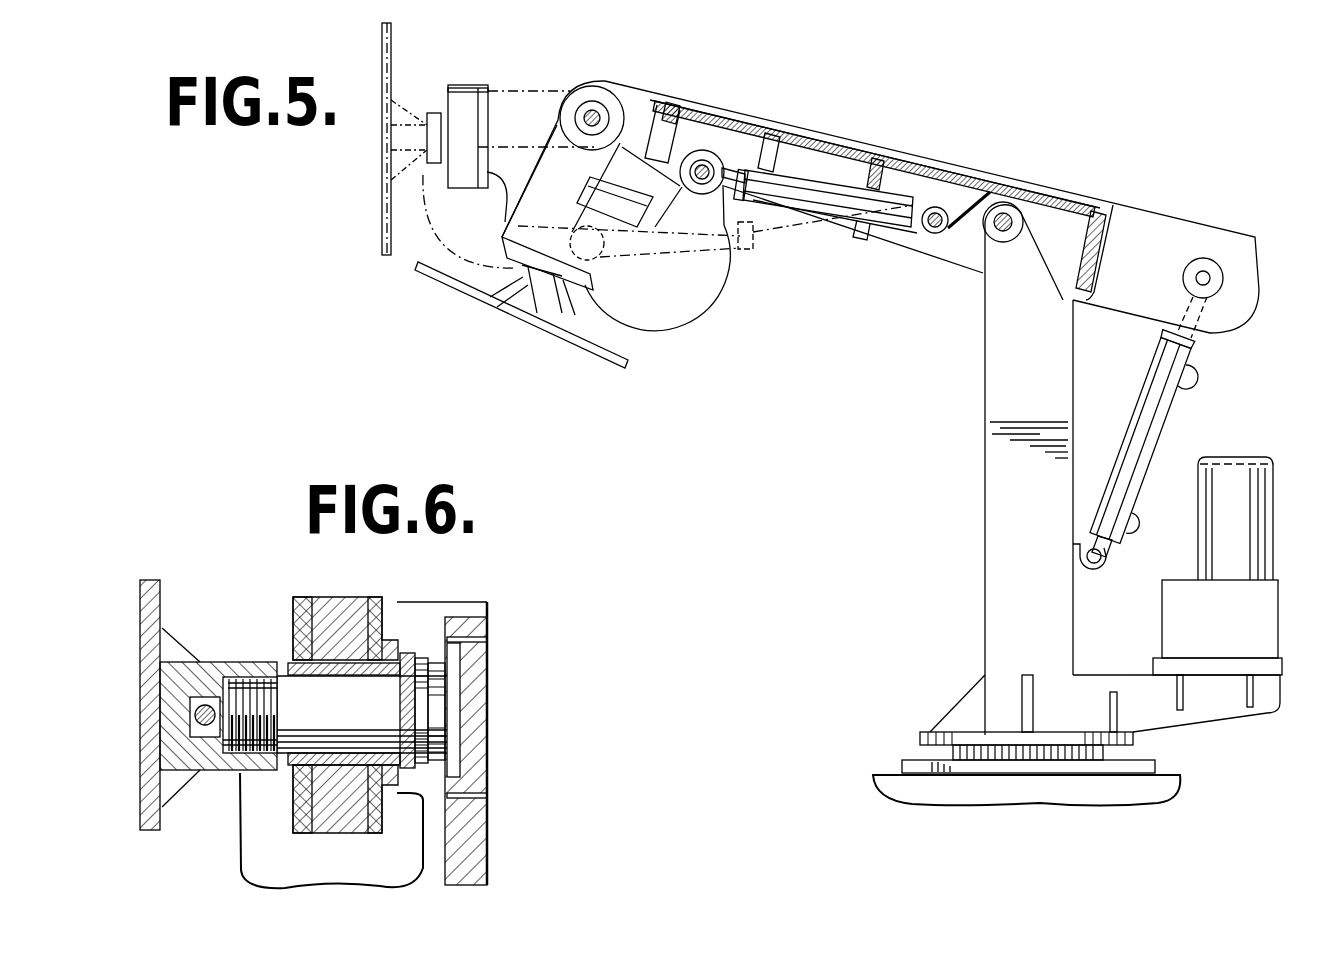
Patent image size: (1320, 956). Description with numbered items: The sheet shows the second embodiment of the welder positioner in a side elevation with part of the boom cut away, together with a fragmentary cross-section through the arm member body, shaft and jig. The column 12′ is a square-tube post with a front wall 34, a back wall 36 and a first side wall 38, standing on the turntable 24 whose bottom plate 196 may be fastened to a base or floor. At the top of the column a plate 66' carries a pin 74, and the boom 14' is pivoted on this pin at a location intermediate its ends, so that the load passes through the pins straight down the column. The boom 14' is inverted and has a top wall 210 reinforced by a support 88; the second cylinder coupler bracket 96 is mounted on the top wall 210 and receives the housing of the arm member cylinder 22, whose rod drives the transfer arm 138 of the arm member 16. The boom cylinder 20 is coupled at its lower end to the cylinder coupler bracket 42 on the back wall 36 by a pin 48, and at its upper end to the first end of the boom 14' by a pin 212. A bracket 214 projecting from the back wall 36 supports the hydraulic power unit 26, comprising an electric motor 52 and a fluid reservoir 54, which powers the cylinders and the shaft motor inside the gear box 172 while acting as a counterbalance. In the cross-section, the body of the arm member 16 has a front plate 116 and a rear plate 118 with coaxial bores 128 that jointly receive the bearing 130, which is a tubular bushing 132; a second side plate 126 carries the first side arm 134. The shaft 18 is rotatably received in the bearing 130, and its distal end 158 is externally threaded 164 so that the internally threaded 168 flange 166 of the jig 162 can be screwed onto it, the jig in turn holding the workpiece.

In FIG. 5, the column 12′ is at (997, 502).
In FIG. 5, the boom 14' is at (880, 207).
In FIG. 5, the arm member 16 is at (548, 172).
In FIG. 5, the shaft 18 is at (520, 258).
In FIG. 6, the shaft 18 is at (285, 678).
In FIG. 5, the boom cylinder 20 is at (1152, 383).
In FIG. 5, the arm member cylinder 22 is at (818, 187).
In FIG. 5, the turntable 24 is at (1100, 753).
In FIG. 5, the hydraulic power unit 26 is at (1242, 472).
In FIG. 5, the front wall 34 is at (985, 573).
In FIG. 5, the back wall 36 is at (1073, 637).
In FIG. 5, the first side wall 38 is at (997, 640).
In FIG. 5, the cylinder coupler bracket 42 is at (1077, 570).
In FIG. 5, the pin 48 is at (1104, 562).
In FIG. 5, the electric motor 52 is at (1258, 535).
In FIG. 5, the fluid reservoir 54 is at (1268, 617).
In FIG. 5, the plate 66' is at (999, 255).
In FIG. 5, the pin 74 is at (1012, 222).
In FIG. 5, the support 88 is at (880, 160).
In FIG. 5, the second cylinder coupler bracket 96 is at (963, 192).
In FIG. 6, the front plate 116 is at (300, 600).
In FIG. 6, the rear plate 118 is at (388, 600).
In FIG. 6, the second side plate 126 is at (336, 822).
In FIG. 6, the bore 128 is at (302, 675).
In FIG. 6, the bearing 130 is at (362, 714).
In FIG. 6, the bushing 132 is at (322, 778).
In FIG. 6, the first side arm 134 is at (424, 602).
In FIG. 5, the transfer arm 138 is at (657, 287).
In FIG. 6, the distal end 158 is at (212, 697).
In FIG. 5, the jig 162 is at (383, 221).
In FIG. 6, the external threads 164 is at (210, 773).
In FIG. 5, the flange 166 is at (557, 287).
In FIG. 6, the flange 166 is at (163, 753).
In FIG. 6, the internal threads 168 is at (268, 773).
In FIG. 6, the gear box 172 is at (478, 826).
In FIG. 5, the bottom plate 196 is at (923, 767).
In FIG. 5, the top wall 210 is at (932, 205).
In FIG. 5, the pin 212 is at (1210, 278).
In FIG. 5, the bracket 214 is at (1265, 700).